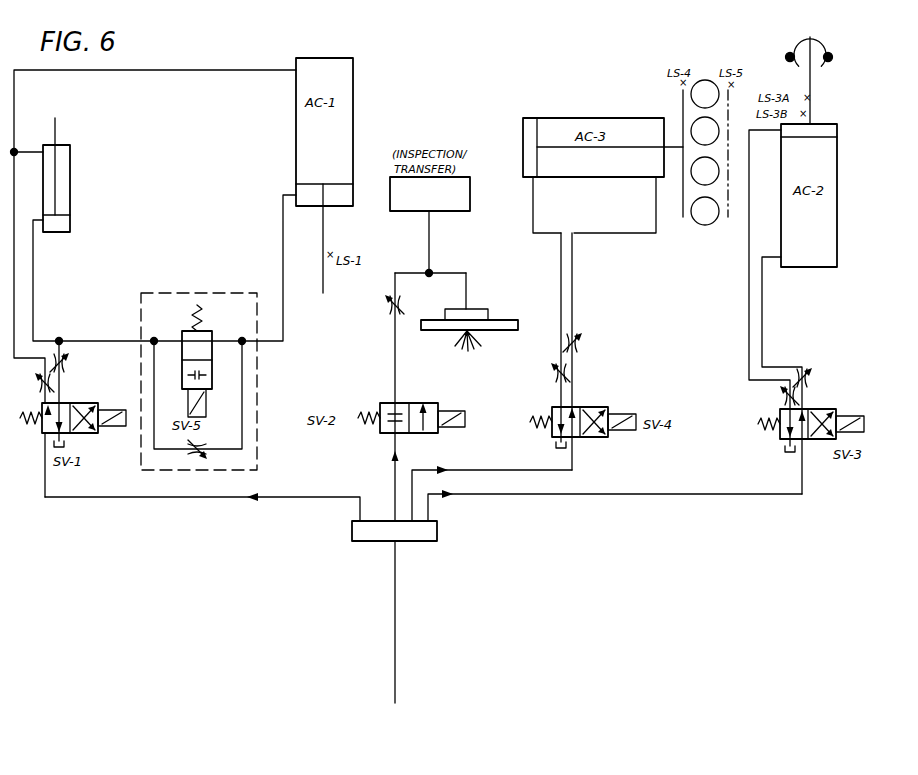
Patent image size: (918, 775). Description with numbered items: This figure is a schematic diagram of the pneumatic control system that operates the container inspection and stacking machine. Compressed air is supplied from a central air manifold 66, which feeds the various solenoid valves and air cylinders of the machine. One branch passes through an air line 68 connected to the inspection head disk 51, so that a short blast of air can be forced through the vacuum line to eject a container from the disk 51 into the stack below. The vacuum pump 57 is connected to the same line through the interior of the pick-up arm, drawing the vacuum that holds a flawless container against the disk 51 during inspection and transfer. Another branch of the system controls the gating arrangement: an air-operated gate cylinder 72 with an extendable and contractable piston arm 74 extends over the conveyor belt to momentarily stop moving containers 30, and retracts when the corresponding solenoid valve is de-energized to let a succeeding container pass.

The piston arm 74 is at (57, 133).
The gate cylinder 72 is at (72, 191).
The vacuum pump 57 is at (470, 211).
The disk 51 is at (493, 320).
The containers 30 is at (692, 176).
The air line 68 is at (396, 443).
The air manifold 66 is at (437, 541).